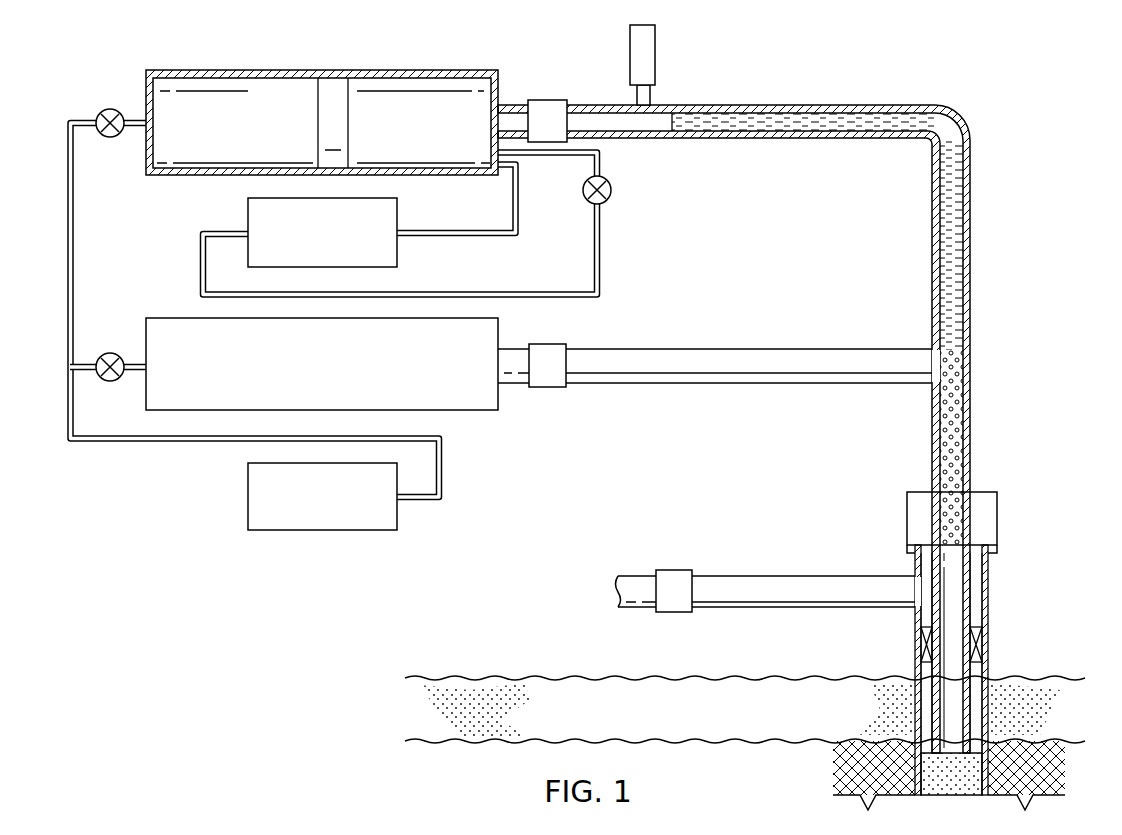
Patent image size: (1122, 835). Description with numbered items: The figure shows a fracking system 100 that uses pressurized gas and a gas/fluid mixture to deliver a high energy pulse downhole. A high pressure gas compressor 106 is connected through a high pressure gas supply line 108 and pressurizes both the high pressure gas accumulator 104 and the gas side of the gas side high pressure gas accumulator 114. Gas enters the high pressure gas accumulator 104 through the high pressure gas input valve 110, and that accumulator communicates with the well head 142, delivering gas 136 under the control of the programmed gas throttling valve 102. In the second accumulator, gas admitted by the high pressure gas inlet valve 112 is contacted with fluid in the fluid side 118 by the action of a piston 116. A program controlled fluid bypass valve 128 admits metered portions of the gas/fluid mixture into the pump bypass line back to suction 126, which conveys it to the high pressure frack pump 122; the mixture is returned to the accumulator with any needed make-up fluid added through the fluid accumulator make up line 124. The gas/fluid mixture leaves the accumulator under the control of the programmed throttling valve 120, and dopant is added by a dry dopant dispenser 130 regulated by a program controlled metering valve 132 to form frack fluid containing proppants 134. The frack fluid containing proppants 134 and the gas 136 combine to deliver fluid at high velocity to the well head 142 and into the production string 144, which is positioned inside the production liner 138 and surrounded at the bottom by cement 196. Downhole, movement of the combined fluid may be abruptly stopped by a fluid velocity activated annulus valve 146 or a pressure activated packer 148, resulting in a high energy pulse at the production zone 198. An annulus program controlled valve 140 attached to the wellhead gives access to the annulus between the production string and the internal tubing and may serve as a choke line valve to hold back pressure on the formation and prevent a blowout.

The fluid injection system 100 is at (970, 93).
The programmed gas throttling valve 102 is at (548, 387).
The high pressure gas accumulator 104 is at (180, 318).
The high pressure gas compressor 106 is at (322, 530).
The high pressure gas supply line 108 is at (442, 464).
The high pressure gas input valve 110 is at (117, 353).
The high pressure gas inlet valve 112 is at (118, 109).
The gas side high pressure gas accumulator 114 is at (214, 136).
The piston 116 is at (318, 108).
The fluid side 118 is at (404, 136).
The programmed throttling valve 120 is at (547, 100).
The high pressure frack pump 122 is at (248, 212).
The fluid accumulator make up line 124 is at (518, 214).
The pump bypass line back to suction 126 is at (600, 252).
The program controlled fluid bypass valve 128 is at (611, 190).
The dopant dispenser 130 is at (635, 65).
The program controlled metering valve 132 is at (655, 52).
The frack fluid containing proppants 134 is at (958, 230).
The gas 136 is at (957, 455).
The production liner 138 is at (988, 592).
The annulus program controlled valve 140 is at (672, 570).
The well head 142 is at (907, 522).
The production string 144 is at (917, 565).
The fluid velocity activated annulus valve 146 is at (921, 624).
The pressure activated packer 148 is at (925, 646).
The cement 196 is at (990, 780).
The production zone 198 is at (633, 718).